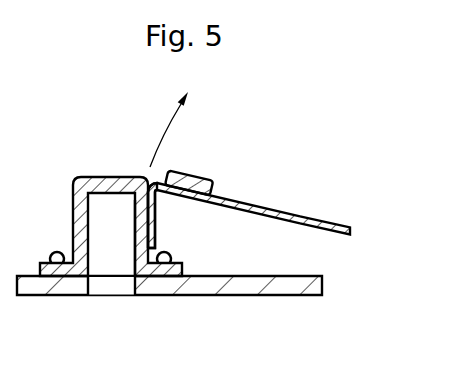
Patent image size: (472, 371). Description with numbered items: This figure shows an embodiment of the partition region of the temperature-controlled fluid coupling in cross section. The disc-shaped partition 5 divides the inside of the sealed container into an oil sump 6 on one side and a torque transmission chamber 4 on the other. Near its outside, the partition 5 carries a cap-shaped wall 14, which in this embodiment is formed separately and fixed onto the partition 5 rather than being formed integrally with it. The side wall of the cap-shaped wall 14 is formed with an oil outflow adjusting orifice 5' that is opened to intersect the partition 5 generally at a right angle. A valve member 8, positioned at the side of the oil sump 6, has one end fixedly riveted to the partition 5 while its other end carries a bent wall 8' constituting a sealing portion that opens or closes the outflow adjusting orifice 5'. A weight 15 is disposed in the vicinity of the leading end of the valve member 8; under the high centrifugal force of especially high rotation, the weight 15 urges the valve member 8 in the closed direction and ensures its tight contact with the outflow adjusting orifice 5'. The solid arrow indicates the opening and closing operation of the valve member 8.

The torque transmission chamber 4 is at (183, 297).
The partition 5 is at (169, 316).
The oil outflow adjusting orifice 5' is at (116, 275).
The oil sump 6 is at (253, 204).
The valve member 8 is at (325, 196).
The bent wall 8' is at (137, 187).
The cap-shaped wall 14 is at (85, 177).
The weight 15 is at (190, 172).